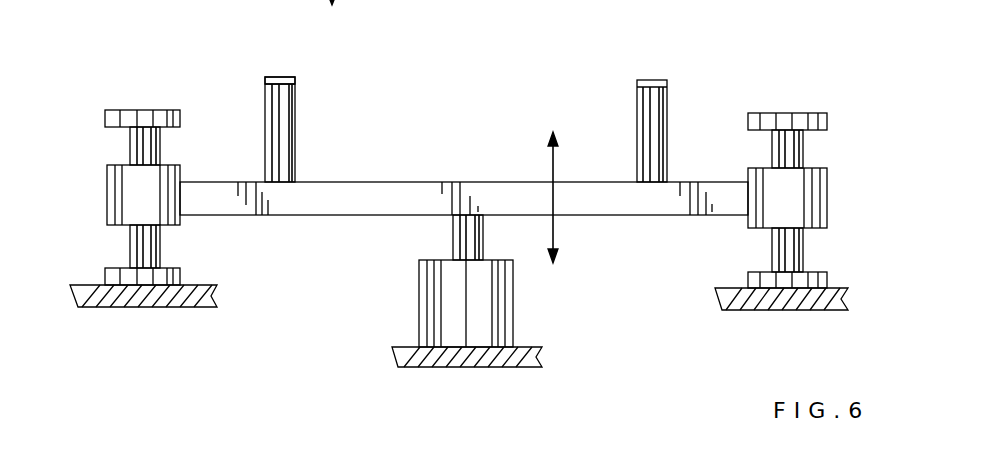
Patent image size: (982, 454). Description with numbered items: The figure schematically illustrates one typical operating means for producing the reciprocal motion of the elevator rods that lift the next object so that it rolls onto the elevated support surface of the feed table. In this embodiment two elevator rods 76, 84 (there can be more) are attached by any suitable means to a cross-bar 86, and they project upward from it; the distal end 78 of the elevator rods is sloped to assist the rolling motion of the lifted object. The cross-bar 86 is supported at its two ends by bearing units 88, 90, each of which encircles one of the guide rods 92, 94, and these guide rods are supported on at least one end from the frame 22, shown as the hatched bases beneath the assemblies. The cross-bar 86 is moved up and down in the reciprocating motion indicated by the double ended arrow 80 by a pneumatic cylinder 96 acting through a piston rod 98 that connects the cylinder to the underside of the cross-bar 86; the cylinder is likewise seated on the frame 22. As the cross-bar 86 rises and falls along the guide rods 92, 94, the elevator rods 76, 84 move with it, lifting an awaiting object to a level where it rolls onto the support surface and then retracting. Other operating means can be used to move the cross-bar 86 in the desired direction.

The frame 22 is at (140, 307).
The elevator rod 76 is at (295, 133).
The distal end 78 is at (278, 77).
The double ended arrow 80 is at (553, 232).
The elevator rod 84 is at (665, 97).
The cross-bar 86 is at (420, 190).
The bearing unit 88 is at (107, 193).
The bearing unit 90 is at (828, 210).
The guide rod 92 is at (128, 152).
The guide rod 94 is at (805, 157).
The pneumatic cylinder 96 is at (419, 322).
The piston rod 98 is at (453, 232).